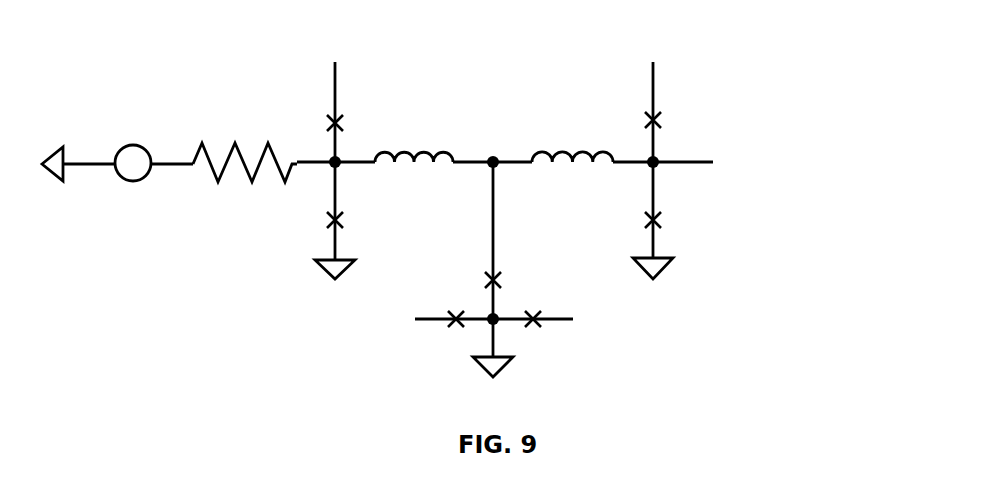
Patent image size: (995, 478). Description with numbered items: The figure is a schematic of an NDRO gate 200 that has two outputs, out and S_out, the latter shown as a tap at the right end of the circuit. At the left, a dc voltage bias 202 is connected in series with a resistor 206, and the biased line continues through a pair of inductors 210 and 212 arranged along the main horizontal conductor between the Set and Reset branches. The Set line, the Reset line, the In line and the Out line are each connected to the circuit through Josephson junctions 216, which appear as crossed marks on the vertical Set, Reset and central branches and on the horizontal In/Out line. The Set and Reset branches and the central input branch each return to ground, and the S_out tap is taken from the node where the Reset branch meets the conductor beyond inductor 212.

The NDRO gate 200 is at (776, 68).
The dc voltage bias 202 is at (137, 133).
The resistor 206 is at (235, 138).
The inductor 210 is at (412, 148).
The inductor 212 is at (562, 150).
The Josephson junctions 216 is at (342, 115).